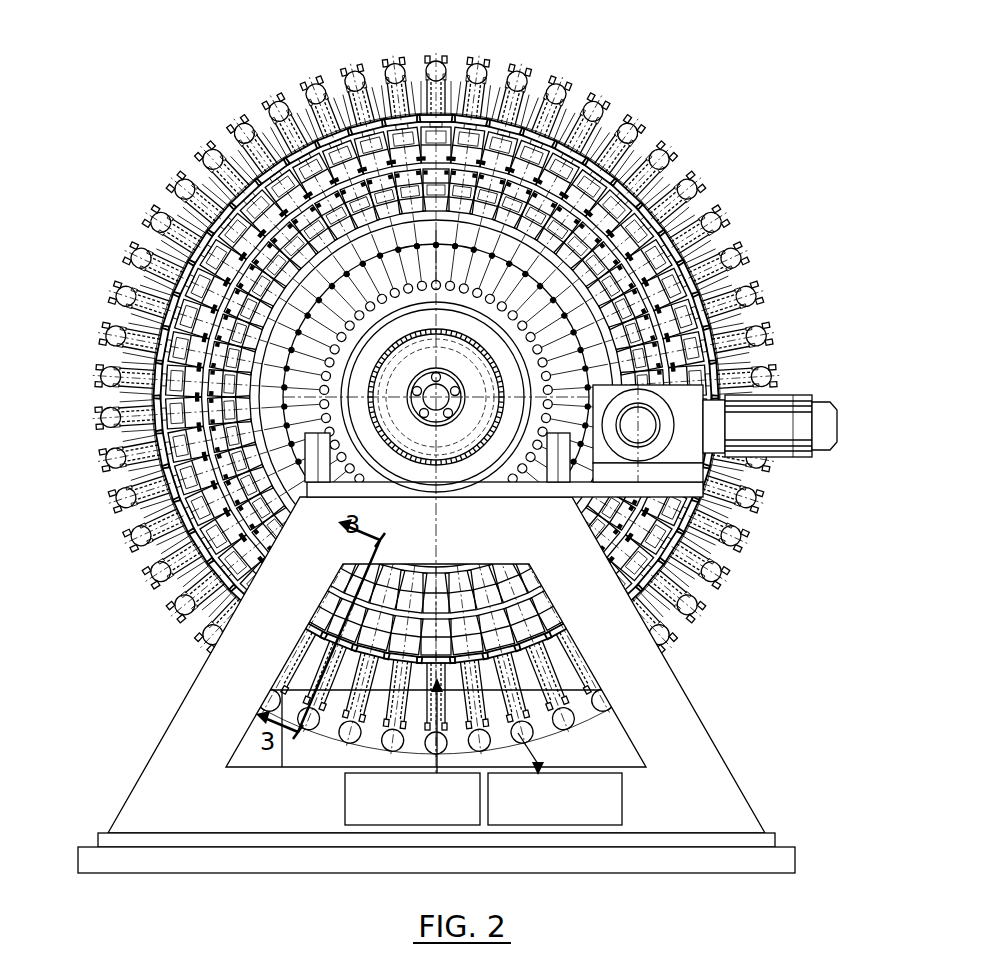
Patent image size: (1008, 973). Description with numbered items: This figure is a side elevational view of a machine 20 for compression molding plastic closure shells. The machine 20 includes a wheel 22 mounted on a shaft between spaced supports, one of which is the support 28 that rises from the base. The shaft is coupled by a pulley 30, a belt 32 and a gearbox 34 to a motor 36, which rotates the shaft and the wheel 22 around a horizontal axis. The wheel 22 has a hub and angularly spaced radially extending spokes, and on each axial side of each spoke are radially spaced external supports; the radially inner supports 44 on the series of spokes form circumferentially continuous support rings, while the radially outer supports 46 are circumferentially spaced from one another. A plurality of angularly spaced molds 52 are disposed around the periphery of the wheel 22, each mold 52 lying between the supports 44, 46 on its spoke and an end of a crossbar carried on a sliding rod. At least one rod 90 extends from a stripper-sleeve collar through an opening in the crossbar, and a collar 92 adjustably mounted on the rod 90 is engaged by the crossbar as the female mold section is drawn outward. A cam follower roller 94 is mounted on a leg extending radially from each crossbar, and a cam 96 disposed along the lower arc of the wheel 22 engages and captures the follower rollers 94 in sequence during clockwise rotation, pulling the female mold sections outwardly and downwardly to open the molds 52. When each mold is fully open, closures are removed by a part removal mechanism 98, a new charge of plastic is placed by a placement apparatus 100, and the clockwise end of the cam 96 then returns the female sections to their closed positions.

The machine 20 is at (706, 88).
The wheel 22 is at (730, 167).
The support 28 is at (690, 752).
The pulley 30 is at (412, 484).
The belt 32 is at (527, 484).
The gearbox 34 is at (682, 393).
The motor 36 is at (820, 403).
The radially inner supports 44 is at (205, 512).
The radially outer supports 46 is at (180, 378).
The molds 52 is at (198, 263).
The rod 90 is at (365, 75).
The collar 92 is at (410, 67).
The cam follower roller 94 is at (593, 107).
The cam 96 is at (322, 748).
The part removal mechanism 98 is at (603, 822).
The placement apparatus 100 is at (353, 822).